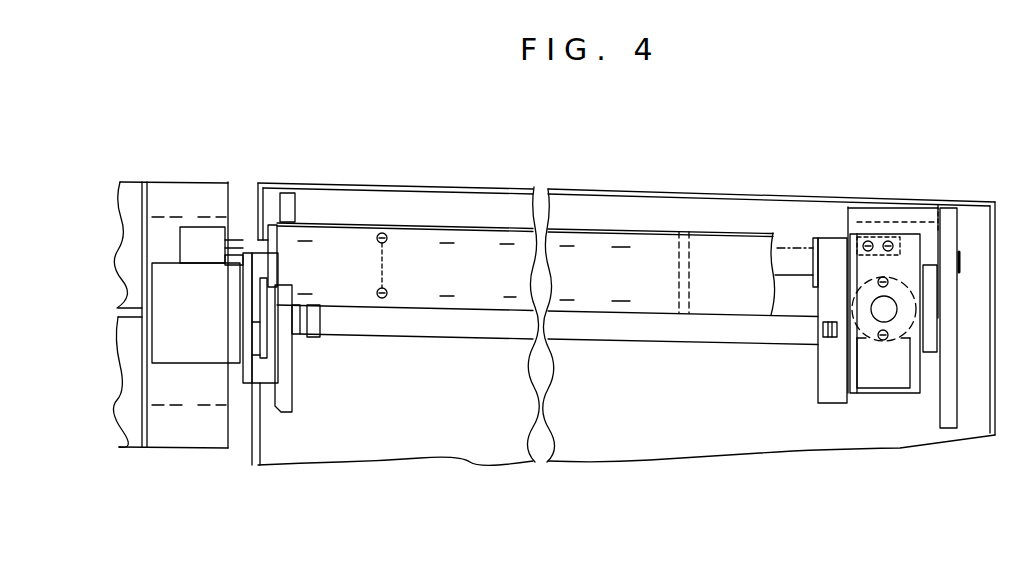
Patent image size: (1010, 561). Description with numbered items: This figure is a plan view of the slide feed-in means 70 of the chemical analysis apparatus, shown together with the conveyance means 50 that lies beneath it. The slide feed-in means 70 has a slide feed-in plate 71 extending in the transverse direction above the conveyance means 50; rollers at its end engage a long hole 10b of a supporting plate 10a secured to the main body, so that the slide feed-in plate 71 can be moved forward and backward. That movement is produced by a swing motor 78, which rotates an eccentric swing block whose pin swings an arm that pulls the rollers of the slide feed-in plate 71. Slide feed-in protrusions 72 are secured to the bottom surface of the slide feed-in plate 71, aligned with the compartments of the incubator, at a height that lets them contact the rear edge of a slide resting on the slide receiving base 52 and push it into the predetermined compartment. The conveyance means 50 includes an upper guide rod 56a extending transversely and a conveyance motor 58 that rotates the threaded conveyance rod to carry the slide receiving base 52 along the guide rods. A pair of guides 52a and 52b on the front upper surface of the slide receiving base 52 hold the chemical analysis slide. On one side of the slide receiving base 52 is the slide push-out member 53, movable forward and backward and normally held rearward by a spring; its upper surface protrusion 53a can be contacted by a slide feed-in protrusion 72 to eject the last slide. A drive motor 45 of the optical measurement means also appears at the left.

The supporting plate 10a is at (289, 198).
The long hole 10b is at (957, 203).
The drive motor 45 is at (118, 418).
The conveyance means 50 is at (803, 402).
The slide receiving base 52 is at (888, 380).
The guide 52a is at (918, 385).
The guide 52b is at (860, 380).
The slide push-out member 53 is at (822, 362).
The upper surface protrusion 53a is at (810, 328).
The upper guide rod 56a is at (793, 257).
The conveyance motor 58 is at (120, 270).
The slide feed-in means 70 is at (448, 216).
The slide feed-in plate 71 is at (493, 237).
The slide feed-in protrusion 72 is at (387, 271).
The swing motor 78 is at (208, 332).